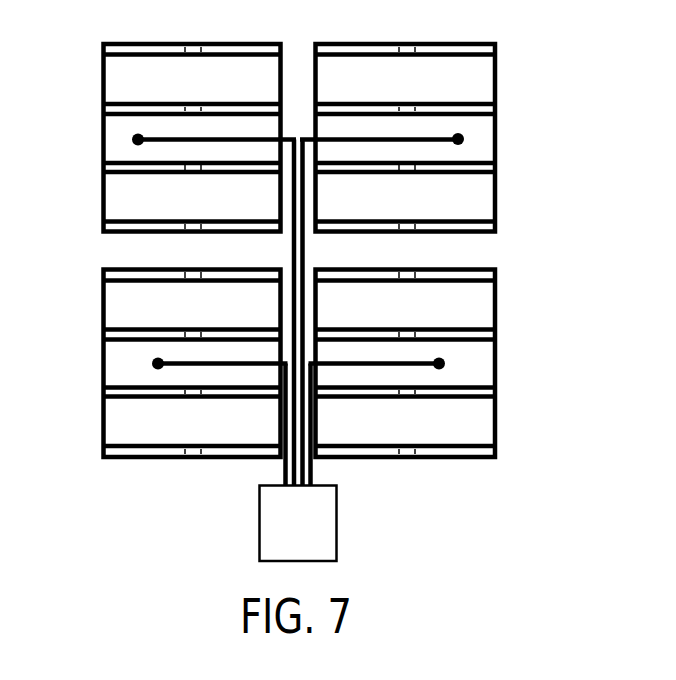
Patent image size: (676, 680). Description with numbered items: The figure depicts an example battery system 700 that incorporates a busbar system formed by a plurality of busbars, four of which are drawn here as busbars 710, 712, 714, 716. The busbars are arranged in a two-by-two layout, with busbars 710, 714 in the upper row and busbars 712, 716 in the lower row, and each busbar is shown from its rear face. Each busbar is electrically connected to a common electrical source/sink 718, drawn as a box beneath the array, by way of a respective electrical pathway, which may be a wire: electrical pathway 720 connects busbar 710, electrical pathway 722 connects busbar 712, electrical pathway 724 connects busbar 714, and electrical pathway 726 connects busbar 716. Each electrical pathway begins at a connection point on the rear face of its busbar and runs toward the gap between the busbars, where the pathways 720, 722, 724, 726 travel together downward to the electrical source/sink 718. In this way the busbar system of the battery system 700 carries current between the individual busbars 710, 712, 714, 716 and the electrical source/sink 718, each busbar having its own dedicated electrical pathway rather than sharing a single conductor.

The battery system 700 is at (297, 298).
The busbar 710 is at (118, 143).
The busbar 712 is at (118, 363).
The busbar 714 is at (473, 142).
The busbar 716 is at (477, 368).
The electrical source/sink 718 is at (323, 527).
The electrical pathway 720 is at (163, 138).
The electrical pathway 722 is at (180, 366).
The electrical pathway 724 is at (433, 138).
The electrical pathway 726 is at (410, 363).